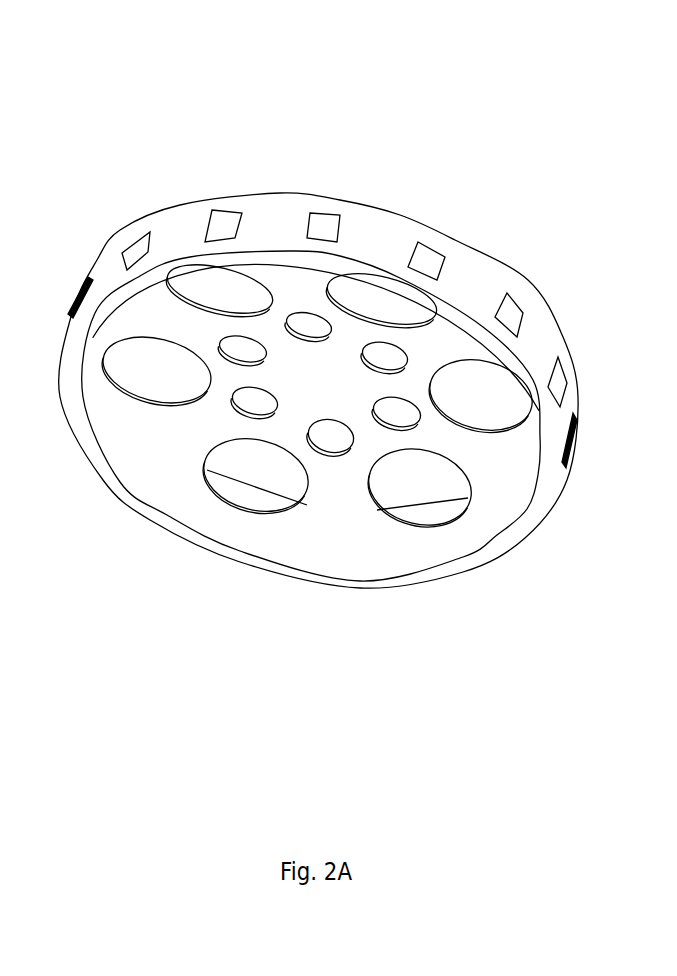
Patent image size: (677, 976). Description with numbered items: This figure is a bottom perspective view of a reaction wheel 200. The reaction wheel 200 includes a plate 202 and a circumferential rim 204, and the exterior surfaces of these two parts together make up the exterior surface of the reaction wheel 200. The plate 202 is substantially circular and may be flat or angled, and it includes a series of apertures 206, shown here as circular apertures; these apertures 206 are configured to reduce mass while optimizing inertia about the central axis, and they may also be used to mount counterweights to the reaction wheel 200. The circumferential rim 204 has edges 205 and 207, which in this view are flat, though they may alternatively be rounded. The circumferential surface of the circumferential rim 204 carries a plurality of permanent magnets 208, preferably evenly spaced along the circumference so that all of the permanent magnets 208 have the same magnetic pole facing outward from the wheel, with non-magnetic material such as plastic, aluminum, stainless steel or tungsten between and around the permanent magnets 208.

The reaction wheel 200 is at (248, 140).
The plate 202 is at (170, 487).
The circumferential rim 204 is at (533, 342).
The edge 205 is at (460, 238).
The apertures 206 is at (421, 490).
The edge 207 is at (547, 490).
The permanent magnets 208 is at (222, 228).